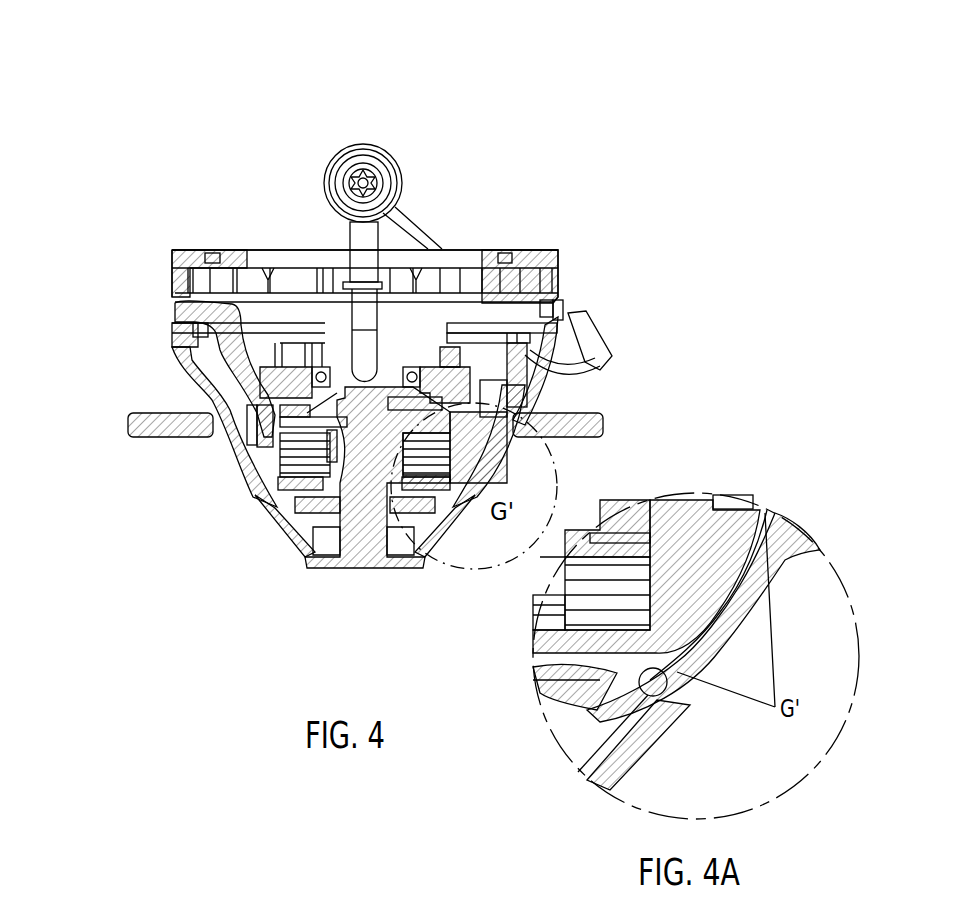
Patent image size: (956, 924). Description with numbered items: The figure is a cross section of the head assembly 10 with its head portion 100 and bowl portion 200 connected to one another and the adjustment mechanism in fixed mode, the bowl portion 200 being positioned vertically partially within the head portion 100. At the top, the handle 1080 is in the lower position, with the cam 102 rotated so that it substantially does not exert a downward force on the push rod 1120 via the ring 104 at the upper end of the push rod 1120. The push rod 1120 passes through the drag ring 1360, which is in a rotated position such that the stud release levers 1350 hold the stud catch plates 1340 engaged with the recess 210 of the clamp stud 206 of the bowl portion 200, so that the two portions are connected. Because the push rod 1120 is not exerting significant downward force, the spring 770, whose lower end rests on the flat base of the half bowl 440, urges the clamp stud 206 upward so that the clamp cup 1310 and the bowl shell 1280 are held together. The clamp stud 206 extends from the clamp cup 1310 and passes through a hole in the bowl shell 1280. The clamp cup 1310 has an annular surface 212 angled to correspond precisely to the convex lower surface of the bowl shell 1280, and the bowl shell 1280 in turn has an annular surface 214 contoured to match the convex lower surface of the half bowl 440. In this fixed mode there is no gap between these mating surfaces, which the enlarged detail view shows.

In FIG. 4, the head assembly 10 is at (232, 84).
In FIG. 4, the head portion 100 is at (270, 250).
In FIG. 4, the cam 102 is at (362, 141).
In FIG. 4, the ring 104 is at (398, 173).
In FIG. 4, the push rod 1120 is at (338, 240).
In FIG. 4, the drag ring 1360 is at (169, 305).
In FIG. 4, the stud release levers 1350 is at (167, 317).
In FIG. 4, the handle 1080 is at (578, 316).
In FIG. 4, the stud catch plates 1340 is at (199, 405).
In FIG. 4, the bowl portion 200 is at (153, 437).
In FIG. 4, the half bowl 440 is at (525, 388).
In FIG. 4, the bowl shell 1280 is at (247, 490).
In FIG. 4, the spring 770 is at (290, 473).
In FIG. 4, the clamp stud 206 is at (373, 537).
In FIG. 4, the recess 210 is at (300, 570).
In FIG. 4, the clamp cup 1310 is at (340, 570).
In FIG. 4A, the annular surface 214 is at (760, 530).
In FIG. 4A, the annular surface 212 is at (663, 700).